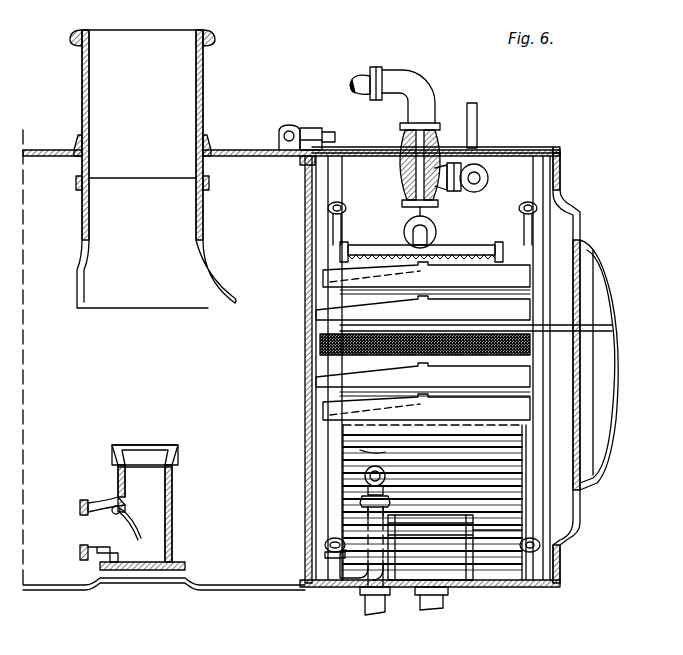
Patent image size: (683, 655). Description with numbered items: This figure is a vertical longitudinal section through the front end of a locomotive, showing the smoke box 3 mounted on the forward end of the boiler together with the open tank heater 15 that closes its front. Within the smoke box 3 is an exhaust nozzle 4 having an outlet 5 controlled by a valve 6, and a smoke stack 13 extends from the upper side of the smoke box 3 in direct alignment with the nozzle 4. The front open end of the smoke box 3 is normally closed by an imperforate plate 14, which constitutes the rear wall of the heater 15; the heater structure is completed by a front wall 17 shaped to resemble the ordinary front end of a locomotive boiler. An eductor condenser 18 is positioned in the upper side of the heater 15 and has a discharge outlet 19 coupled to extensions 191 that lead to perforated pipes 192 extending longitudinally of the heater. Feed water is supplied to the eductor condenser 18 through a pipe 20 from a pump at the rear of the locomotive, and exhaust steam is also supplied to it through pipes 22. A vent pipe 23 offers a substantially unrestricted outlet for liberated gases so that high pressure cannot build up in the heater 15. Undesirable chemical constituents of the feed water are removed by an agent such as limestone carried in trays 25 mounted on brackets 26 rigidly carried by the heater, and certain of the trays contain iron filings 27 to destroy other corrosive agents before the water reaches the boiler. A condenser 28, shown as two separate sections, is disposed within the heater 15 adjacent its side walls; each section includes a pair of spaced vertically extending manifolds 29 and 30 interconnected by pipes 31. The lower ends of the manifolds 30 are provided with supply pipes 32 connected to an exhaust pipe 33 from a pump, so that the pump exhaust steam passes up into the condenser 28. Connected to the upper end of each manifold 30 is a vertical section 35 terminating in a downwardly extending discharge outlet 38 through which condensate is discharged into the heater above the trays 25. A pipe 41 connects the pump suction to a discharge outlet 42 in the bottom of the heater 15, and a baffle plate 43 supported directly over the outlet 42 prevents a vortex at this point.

The smoke box 3 is at (66, 151).
The exhaust nozzle 4 is at (173, 517).
The outlet 5 is at (92, 528).
The valve 6 is at (128, 523).
The smoke stack 13 is at (201, 93).
The imperforate plate 14 is at (308, 227).
The open tank heater 15 is at (512, 149).
The front wall 17 is at (616, 393).
The eductor condenser 18 is at (400, 160).
The discharge outlet 19 is at (404, 230).
The extensions 191 is at (436, 234).
The perforated pipes 192 is at (466, 252).
The pipe 20 is at (352, 78).
The pipes 22 is at (489, 179).
The vent pipe 23 is at (478, 117).
The trays 25 is at (464, 343).
The brackets 26 is at (320, 310).
The iron filings 27 is at (320, 345).
The condenser 28 is at (502, 540).
The manifold 29 is at (530, 493).
The manifold 30 is at (334, 491).
The pipes 31 is at (340, 447).
The supply pipes 32 is at (324, 548).
The exhaust pipe 33 is at (372, 606).
The vertical section 35 is at (524, 230).
The discharge outlet 38 is at (344, 204).
The pipe 41 is at (440, 603).
The discharge outlet 42 is at (439, 595).
The baffle plate 43 is at (448, 520).